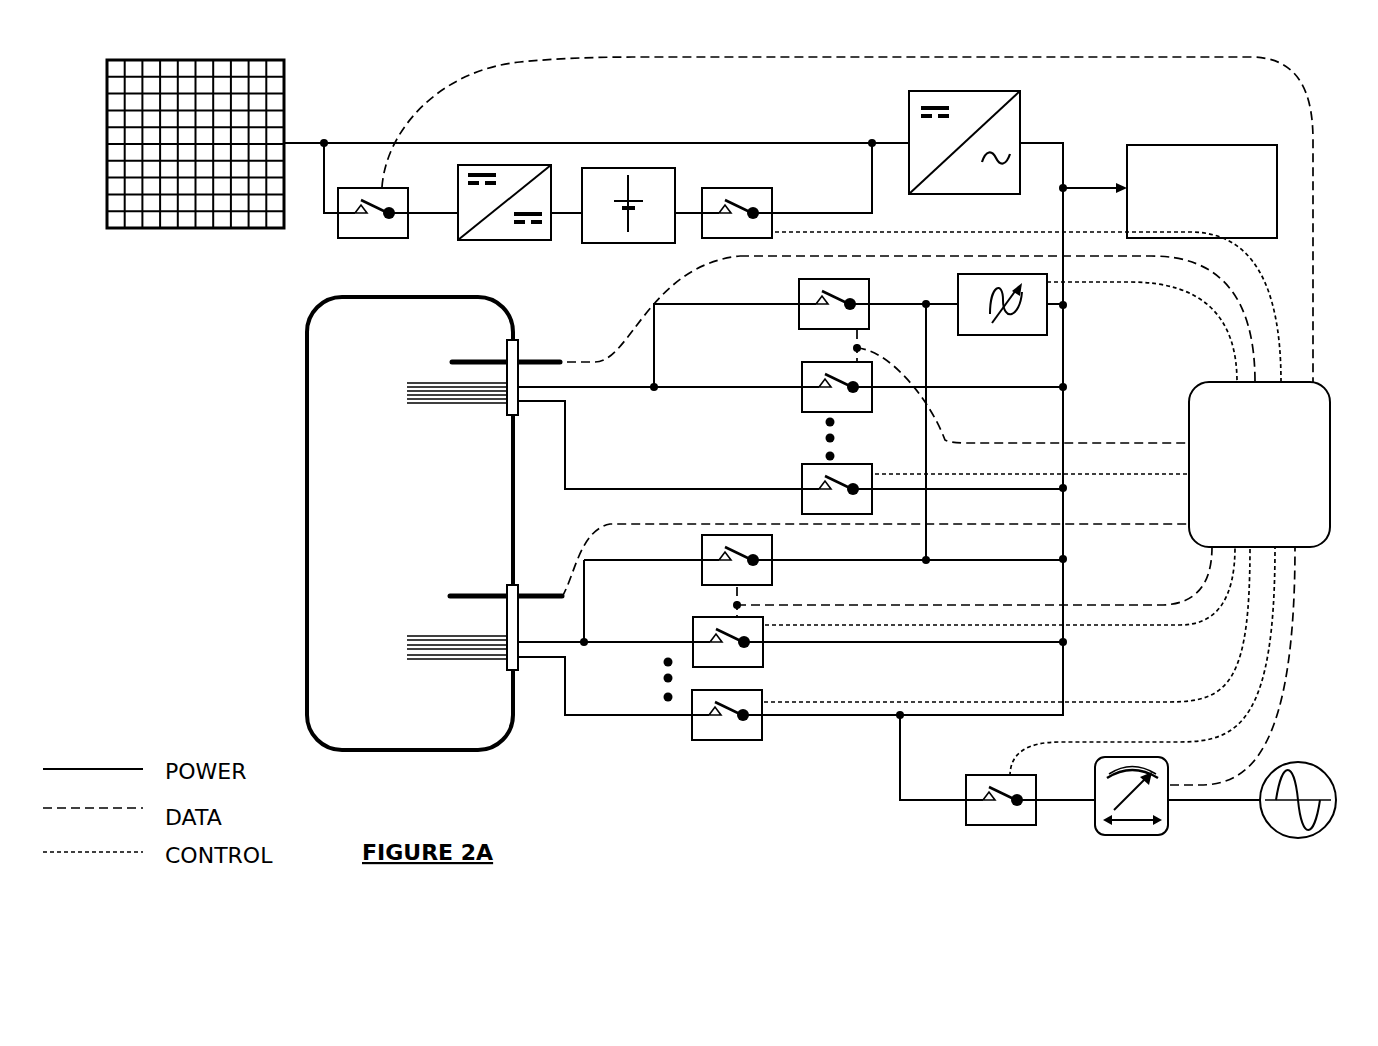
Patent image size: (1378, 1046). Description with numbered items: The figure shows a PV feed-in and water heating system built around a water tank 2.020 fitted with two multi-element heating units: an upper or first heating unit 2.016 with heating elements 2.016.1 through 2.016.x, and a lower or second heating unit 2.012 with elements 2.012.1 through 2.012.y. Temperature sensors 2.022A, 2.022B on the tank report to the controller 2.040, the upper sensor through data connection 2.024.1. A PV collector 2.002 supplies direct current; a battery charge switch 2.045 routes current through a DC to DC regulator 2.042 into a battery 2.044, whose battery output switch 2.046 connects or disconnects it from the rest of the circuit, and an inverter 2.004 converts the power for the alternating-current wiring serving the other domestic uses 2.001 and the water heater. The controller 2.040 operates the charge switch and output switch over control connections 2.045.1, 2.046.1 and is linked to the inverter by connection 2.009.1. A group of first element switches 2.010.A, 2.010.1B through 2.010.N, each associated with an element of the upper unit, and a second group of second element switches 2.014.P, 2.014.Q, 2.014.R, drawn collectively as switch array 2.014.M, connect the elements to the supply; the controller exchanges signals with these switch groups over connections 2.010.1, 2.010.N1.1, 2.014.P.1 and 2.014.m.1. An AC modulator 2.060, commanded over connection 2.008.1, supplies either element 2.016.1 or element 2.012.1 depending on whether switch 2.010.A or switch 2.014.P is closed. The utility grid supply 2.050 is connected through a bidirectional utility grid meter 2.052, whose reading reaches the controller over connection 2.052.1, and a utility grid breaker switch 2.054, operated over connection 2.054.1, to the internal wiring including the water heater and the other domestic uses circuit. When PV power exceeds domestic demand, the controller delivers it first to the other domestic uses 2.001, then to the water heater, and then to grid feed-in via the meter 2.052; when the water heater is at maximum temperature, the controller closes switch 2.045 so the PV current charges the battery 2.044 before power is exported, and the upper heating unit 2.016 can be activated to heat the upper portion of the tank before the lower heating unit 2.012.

The other domestic uses 2.001 is at (1202, 191).
The PV collector 2.002 is at (195, 162).
The inverter 2.004 is at (931, 139).
The battery charge switch 2.045 is at (358, 230).
The PV switch control line 2.045.1 is at (847, 219).
The DC to DC regulator 2.042 is at (504, 218).
The battery 2.044 is at (628, 220).
The battery output switch 2.046 is at (737, 195).
The battery switch control line 2.046.1 is at (1028, 291).
The inverter data line 2.009.1 is at (997, 233).
The upper sensor data line 2.024.1 is at (763, 306).
The first element switch 2.010.A is at (790, 308).
The first element switch 2.010.1B is at (782, 382).
The first element switch 2.010.N is at (790, 486).
The upper switch data line 2.010.1 is at (1021, 386).
The upper switch control line 2.010.N1.1 is at (1032, 487).
The AC modulator 2.060 is at (1002, 321).
The power modulator control line 2.008.1 is at (1142, 332).
The controller 2.040 is at (1259, 464).
The temperature sensor 2.022A is at (485, 341).
The temperature sensor 2.022B is at (799, 560).
The first heating unit 2.016 is at (348, 388).
The heating element 2.016.1 is at (439, 374).
The heating element 2.016.x is at (447, 418).
The water tank 2.020 is at (410, 523).
The second heating unit 2.012 is at (363, 639).
The heating element 2.012.1 is at (457, 620).
The heating element 2.012.y is at (457, 674).
The second element switch 2.014.P is at (692, 556).
The second element switch 2.014.Q is at (919, 607).
The second element switch 2.014.R is at (681, 719).
The lower heater switch array 2.014.M is at (777, 640).
The lower switch data line 2.014.P.1 is at (972, 582).
The lower switch control line 2.014.m.1 is at (1007, 624).
The bidirectional utility grid meter 2.052 is at (1131, 813).
The grid meter data line 2.052.1 is at (1266, 666).
The utility grid breaker switch 2.054 is at (1001, 822).
The grid switch control line 2.054.1 is at (1142, 661).
The utility grid supply 2.050 is at (1298, 815).